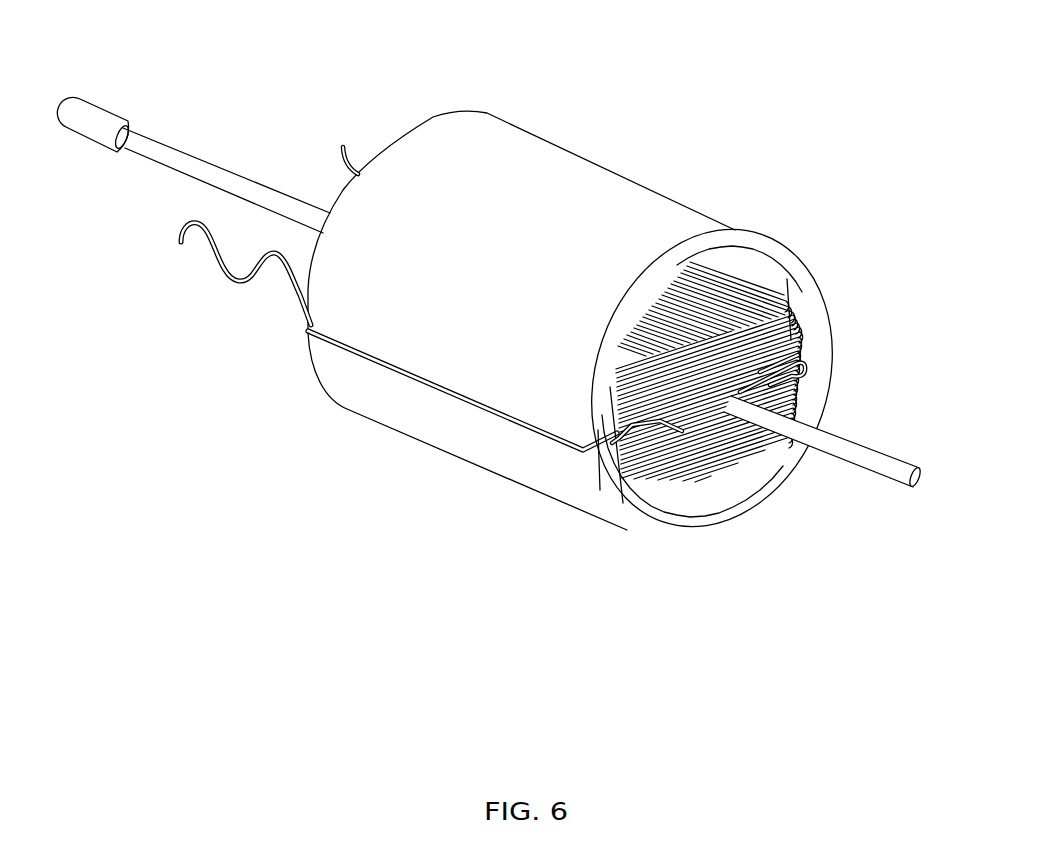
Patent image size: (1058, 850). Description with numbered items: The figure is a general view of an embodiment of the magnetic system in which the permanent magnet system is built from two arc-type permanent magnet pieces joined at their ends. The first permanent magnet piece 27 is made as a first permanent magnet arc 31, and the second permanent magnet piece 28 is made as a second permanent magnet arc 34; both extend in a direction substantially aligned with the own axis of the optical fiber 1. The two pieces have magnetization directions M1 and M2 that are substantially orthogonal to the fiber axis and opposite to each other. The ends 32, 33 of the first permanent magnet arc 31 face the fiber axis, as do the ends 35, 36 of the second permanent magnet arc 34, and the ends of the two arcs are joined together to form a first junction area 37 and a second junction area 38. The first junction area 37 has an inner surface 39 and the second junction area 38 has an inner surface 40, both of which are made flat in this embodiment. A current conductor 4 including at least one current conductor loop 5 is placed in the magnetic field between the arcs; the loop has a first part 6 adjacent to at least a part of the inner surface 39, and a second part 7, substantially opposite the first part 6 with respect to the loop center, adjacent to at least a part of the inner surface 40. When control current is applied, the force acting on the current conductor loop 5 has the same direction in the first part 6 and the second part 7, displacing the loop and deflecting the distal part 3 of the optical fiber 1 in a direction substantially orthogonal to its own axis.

The optical fiber 1 is at (287, 208).
The distal part of the optical fiber 3 is at (882, 460).
The current conductor 4 is at (711, 274).
The current conductor loop 5 is at (734, 276).
The first part of the current conductor loop 6 is at (637, 460).
The second part of the current conductor loop 7 is at (713, 312).
The first permanent magnet piece 27 is at (521, 231).
The first permanent magnet arc 31 is at (433, 147).
The second permanent magnet piece 28 is at (388, 431).
The second permanent magnet arc 34 is at (358, 387).
The end of the first permanent magnet arc 32 is at (600, 423).
The end of the first permanent magnet arc 33 is at (807, 312).
The end of the second permanent magnet arc 35 is at (599, 458).
The end of the second permanent magnet arc 36 is at (803, 350).
The first junction area 37 is at (461, 398).
The second junction area 38 is at (797, 333).
The inner surface of the first junction area 39 is at (613, 388).
The inner surface of the second junction area 40 is at (787, 279).
The magnetization direction of the first permanent magnet piece M1 is at (673, 270).
The magnetization direction of the second permanent magnet piece M2 is at (712, 514).